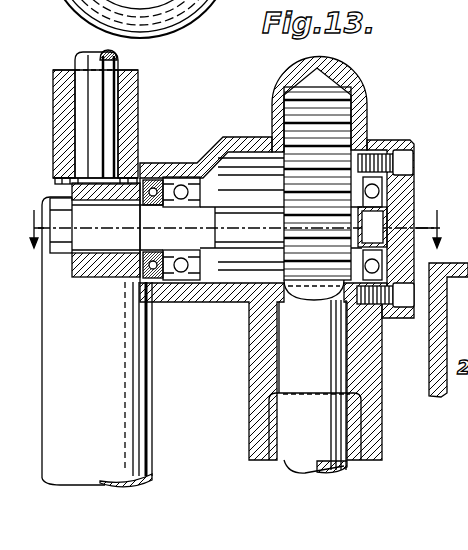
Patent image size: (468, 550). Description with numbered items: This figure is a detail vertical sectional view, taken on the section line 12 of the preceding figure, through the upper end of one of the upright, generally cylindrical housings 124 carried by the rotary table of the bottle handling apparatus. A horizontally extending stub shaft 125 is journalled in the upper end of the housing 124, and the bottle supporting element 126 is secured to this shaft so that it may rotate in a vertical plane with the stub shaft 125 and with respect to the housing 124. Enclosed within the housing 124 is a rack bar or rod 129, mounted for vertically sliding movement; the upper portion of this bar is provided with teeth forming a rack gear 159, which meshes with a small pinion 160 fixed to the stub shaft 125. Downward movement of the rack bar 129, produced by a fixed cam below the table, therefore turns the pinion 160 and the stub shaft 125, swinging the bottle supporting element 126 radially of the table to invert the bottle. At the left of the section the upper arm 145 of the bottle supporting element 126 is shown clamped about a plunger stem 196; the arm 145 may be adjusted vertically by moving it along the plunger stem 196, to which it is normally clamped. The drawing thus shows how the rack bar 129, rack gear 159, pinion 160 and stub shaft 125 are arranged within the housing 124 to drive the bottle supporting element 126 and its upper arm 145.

The section line 12- 12 is at (240, 229).
The housing 124 is at (267, 436).
The stub shaft 125 is at (227, 203).
The bottle supporting element 126 is at (113, 403).
The rack bar 129 is at (306, 452).
The upper arm 145 is at (133, 91).
The rack gear 159 is at (331, 140).
The pinion 160 is at (250, 288).
The plunger stem 196 is at (110, 137).